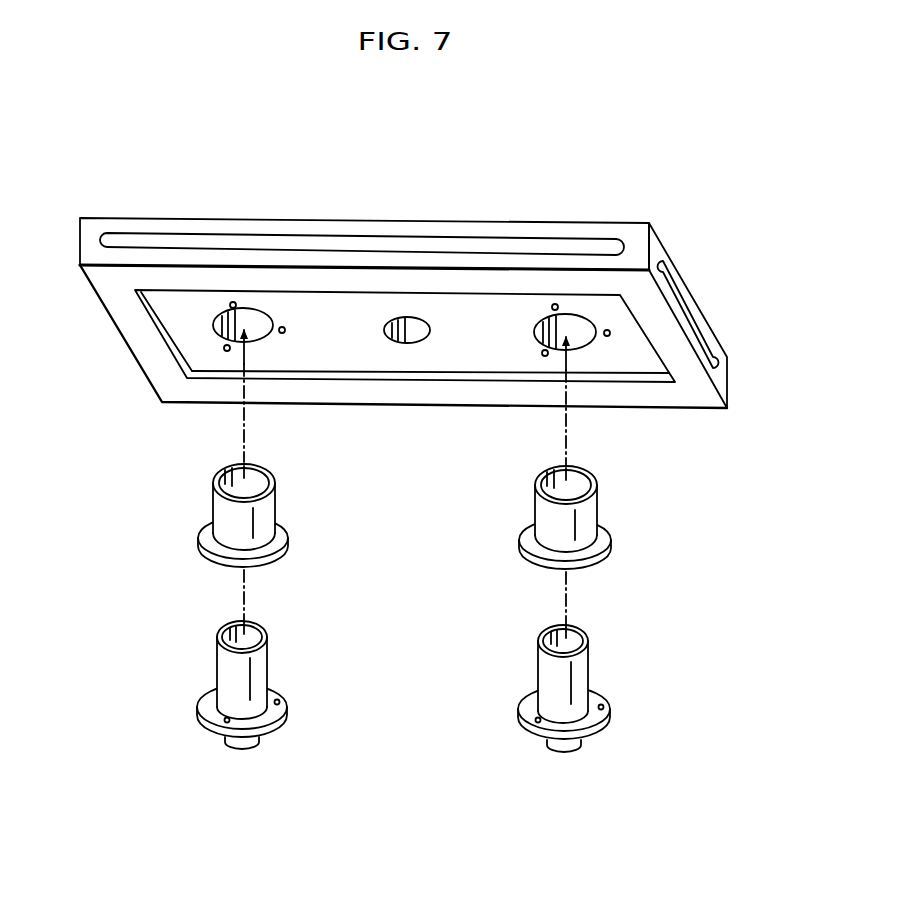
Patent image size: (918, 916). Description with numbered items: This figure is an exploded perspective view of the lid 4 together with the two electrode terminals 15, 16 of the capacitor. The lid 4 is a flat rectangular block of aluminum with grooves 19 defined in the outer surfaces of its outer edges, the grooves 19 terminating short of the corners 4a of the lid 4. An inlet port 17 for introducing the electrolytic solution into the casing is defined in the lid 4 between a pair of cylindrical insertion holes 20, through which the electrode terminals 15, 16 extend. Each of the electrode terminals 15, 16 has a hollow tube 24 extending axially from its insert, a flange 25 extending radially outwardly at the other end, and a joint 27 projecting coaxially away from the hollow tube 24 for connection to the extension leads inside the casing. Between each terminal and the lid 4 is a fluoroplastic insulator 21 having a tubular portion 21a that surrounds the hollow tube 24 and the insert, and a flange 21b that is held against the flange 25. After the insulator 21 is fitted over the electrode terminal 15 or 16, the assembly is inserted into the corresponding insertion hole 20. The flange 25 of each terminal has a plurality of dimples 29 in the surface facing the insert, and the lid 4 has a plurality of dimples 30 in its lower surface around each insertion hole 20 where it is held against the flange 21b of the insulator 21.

The lid 4 is at (662, 242).
The corners 4a is at (78, 224).
The electrode terminal 15 is at (215, 668).
The electrode terminal 16 is at (592, 666).
The inlet port 17 is at (415, 340).
The grooves 19 is at (490, 248).
The insertion holes 20 is at (257, 332).
The insulator 21 is at (410, 516).
The tubular portion 21a is at (224, 512).
The flange 21b is at (282, 540).
The hollow tube 24 is at (267, 635).
The flange 25 is at (413, 738).
The joint 27 is at (243, 749).
The dimples 29 is at (280, 702).
The dimples 30 is at (232, 302).